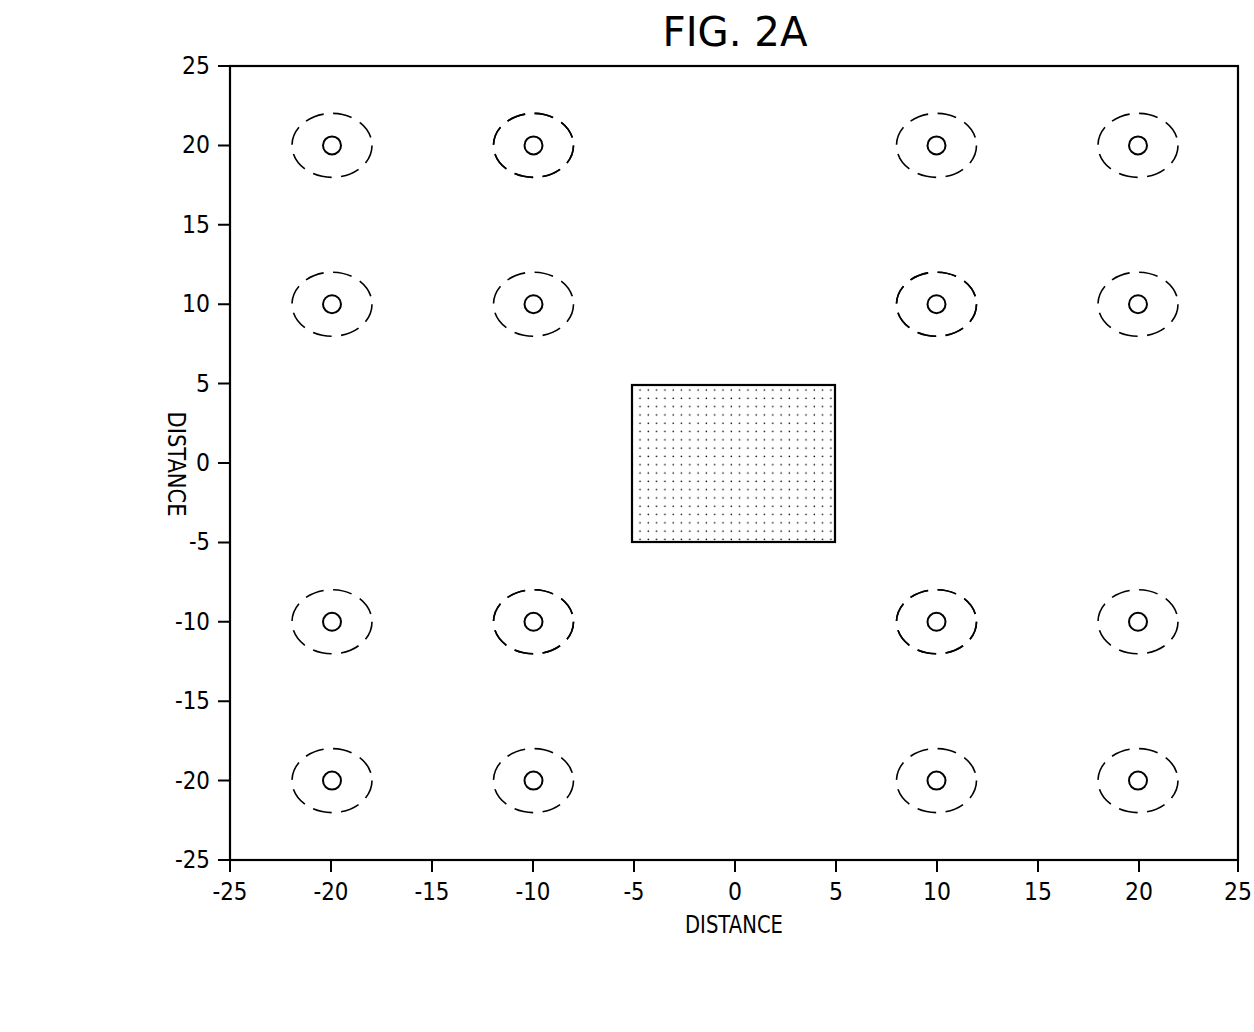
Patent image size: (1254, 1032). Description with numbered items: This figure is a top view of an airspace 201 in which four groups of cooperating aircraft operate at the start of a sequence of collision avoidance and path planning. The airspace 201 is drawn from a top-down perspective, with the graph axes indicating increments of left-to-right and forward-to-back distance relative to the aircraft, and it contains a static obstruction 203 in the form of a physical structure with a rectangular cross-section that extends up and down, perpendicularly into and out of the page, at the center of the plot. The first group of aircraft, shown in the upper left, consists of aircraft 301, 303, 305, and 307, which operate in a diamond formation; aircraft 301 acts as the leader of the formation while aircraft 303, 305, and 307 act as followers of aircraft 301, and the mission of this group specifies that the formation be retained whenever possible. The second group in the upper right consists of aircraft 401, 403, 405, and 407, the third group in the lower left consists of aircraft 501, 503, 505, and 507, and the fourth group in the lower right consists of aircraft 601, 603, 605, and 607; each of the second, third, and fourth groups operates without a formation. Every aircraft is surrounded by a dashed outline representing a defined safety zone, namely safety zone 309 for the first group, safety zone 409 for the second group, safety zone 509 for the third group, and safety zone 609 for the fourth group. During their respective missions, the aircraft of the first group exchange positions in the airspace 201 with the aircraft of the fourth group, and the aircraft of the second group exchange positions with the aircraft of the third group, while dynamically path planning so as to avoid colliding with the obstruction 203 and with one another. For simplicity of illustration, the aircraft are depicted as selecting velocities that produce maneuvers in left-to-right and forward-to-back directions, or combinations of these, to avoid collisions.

The airspace 201 is at (756, 240).
The static obstruction 203 is at (735, 384).
The aircraft 301 is at (527, 296).
The aircraft 303 is at (527, 137).
The aircraft 305 is at (325, 296).
The aircraft 307 is at (325, 137).
The safety zone 309 is at (566, 165).
The aircraft 401 is at (943, 296).
The aircraft 403 is at (943, 137).
The aircraft 405 is at (1145, 296).
The aircraft 407 is at (1145, 137).
The safety zone 409 is at (940, 336).
The aircraft 501 is at (528, 630).
The aircraft 503 is at (528, 789).
The aircraft 505 is at (326, 630).
The aircraft 507 is at (326, 789).
The safety zone 509 is at (526, 590).
The aircraft 601 is at (942, 630).
The aircraft 603 is at (942, 789).
The aircraft 605 is at (1144, 630).
The aircraft 607 is at (1144, 789).
The safety zone 609 is at (951, 590).